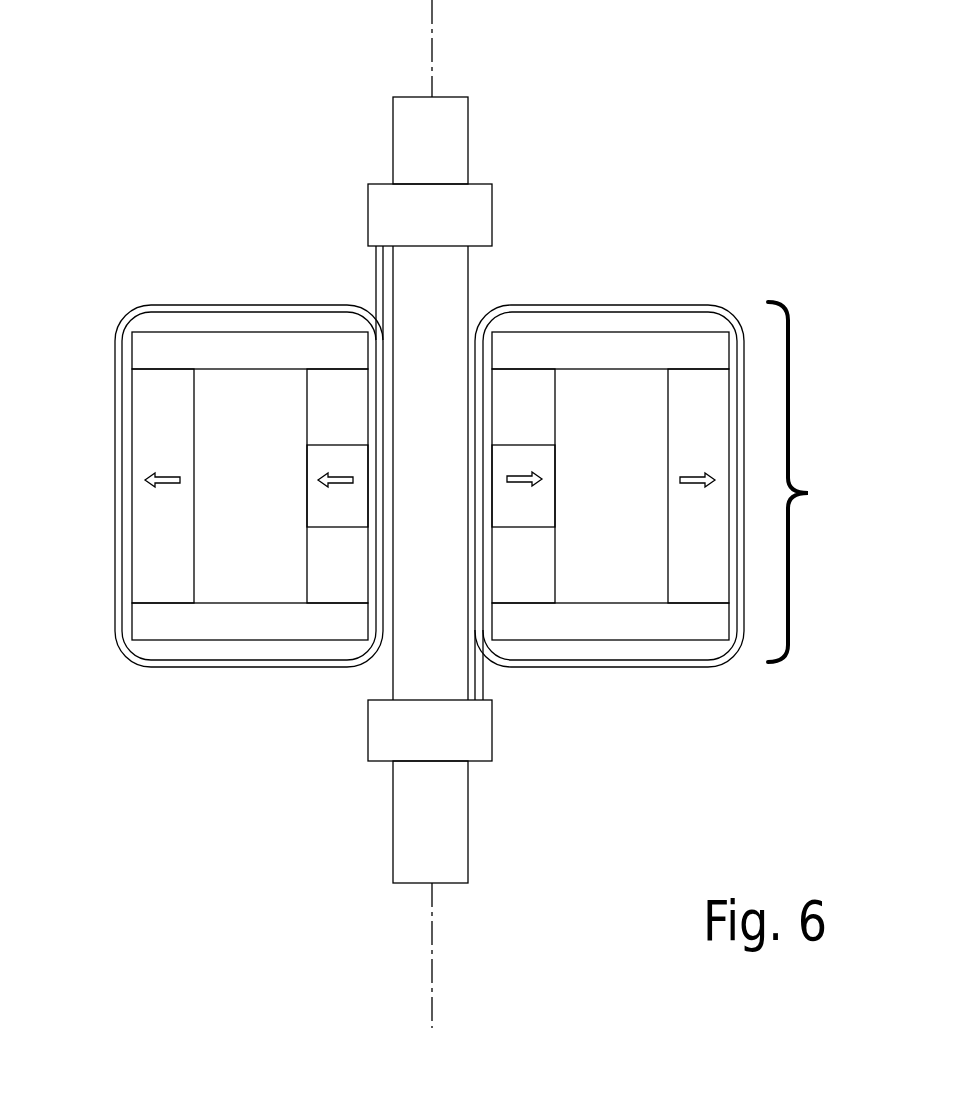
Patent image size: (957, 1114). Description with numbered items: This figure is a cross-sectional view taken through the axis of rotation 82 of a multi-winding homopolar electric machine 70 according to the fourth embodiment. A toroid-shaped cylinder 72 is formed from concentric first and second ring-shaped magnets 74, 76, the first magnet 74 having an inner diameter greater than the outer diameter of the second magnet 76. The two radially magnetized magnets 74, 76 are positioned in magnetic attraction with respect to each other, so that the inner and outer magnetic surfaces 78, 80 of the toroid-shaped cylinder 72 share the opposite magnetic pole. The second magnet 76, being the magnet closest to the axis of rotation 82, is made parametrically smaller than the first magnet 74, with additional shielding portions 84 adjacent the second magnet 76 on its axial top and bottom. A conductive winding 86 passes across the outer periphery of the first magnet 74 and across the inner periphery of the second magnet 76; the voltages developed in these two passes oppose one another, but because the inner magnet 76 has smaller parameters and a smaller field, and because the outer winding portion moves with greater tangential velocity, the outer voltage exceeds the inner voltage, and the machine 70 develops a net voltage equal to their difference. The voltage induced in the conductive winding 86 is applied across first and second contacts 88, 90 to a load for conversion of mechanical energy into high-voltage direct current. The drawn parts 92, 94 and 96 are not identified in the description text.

The multi-winding homopolar electric machine 70 is at (737, 146).
The toroid-shaped cylinder 72 is at (809, 482).
The first ring-shaped magnet 74 is at (160, 402).
The second ring-shaped magnet 76 is at (513, 462).
The inner magnetic surface 78 is at (367, 507).
The outer magnetic surface 80 is at (130, 585).
The axis of rotation 82 is at (433, 28).
The shielding portions 84 is at (333, 543).
The conductive winding 86 is at (197, 667).
The first contact 88 is at (485, 222).
The second contact 90 is at (473, 742).
The shaft 92 is at (448, 847).
The upper end cap 94 is at (258, 352).
The lower end cap 96 is at (297, 625).